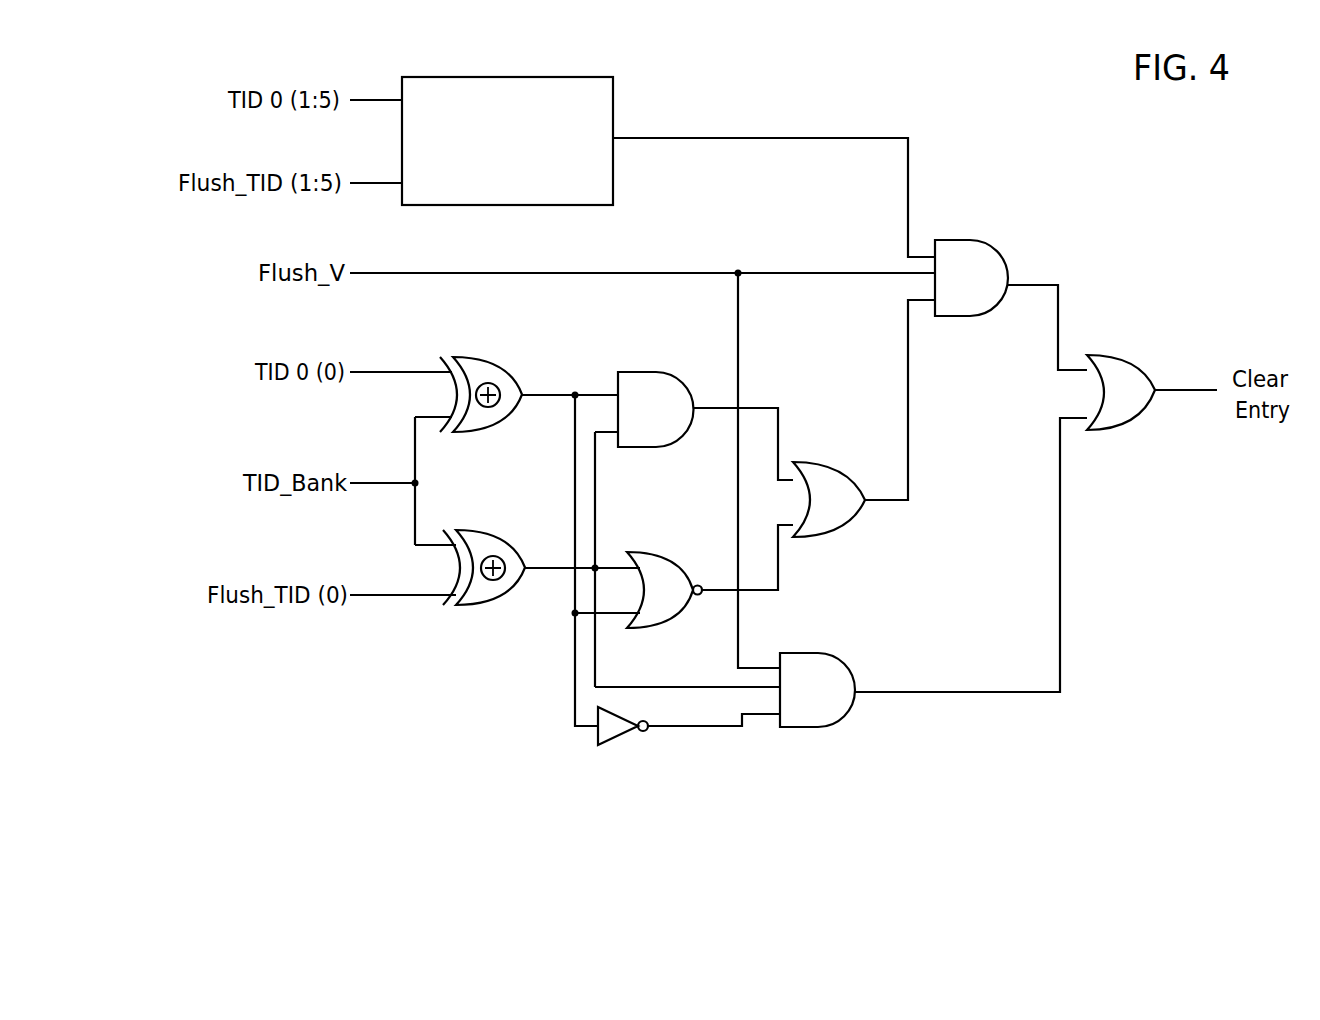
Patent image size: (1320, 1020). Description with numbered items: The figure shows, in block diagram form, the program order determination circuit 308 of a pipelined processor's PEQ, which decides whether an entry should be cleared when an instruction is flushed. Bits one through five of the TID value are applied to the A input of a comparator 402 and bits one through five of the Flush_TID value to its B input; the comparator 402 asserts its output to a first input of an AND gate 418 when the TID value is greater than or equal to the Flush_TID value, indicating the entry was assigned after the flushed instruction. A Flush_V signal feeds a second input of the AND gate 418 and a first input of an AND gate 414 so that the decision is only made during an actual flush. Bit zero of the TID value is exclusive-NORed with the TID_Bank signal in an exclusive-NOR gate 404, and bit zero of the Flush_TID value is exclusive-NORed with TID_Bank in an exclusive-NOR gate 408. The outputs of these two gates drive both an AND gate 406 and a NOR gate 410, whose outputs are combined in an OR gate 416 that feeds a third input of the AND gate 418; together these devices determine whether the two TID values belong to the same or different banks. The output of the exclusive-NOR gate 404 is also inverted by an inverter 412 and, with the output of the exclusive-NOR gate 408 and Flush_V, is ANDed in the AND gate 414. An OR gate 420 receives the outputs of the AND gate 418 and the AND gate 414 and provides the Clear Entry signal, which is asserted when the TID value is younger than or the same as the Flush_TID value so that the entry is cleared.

The program order determination circuit 308 is at (433, 748).
The comparator 402 is at (580, 73).
The exclusive-NOR gate 404 is at (472, 355).
The AND gate 406 is at (640, 371).
The exclusive-NOR gate 408 is at (470, 606).
The NOR gate 410 is at (643, 552).
The inverter 412 is at (613, 740).
The AND gate 414 is at (810, 728).
The OR gate 416 is at (808, 462).
The AND gate 418 is at (952, 238).
The OR gate 420 is at (1103, 353).